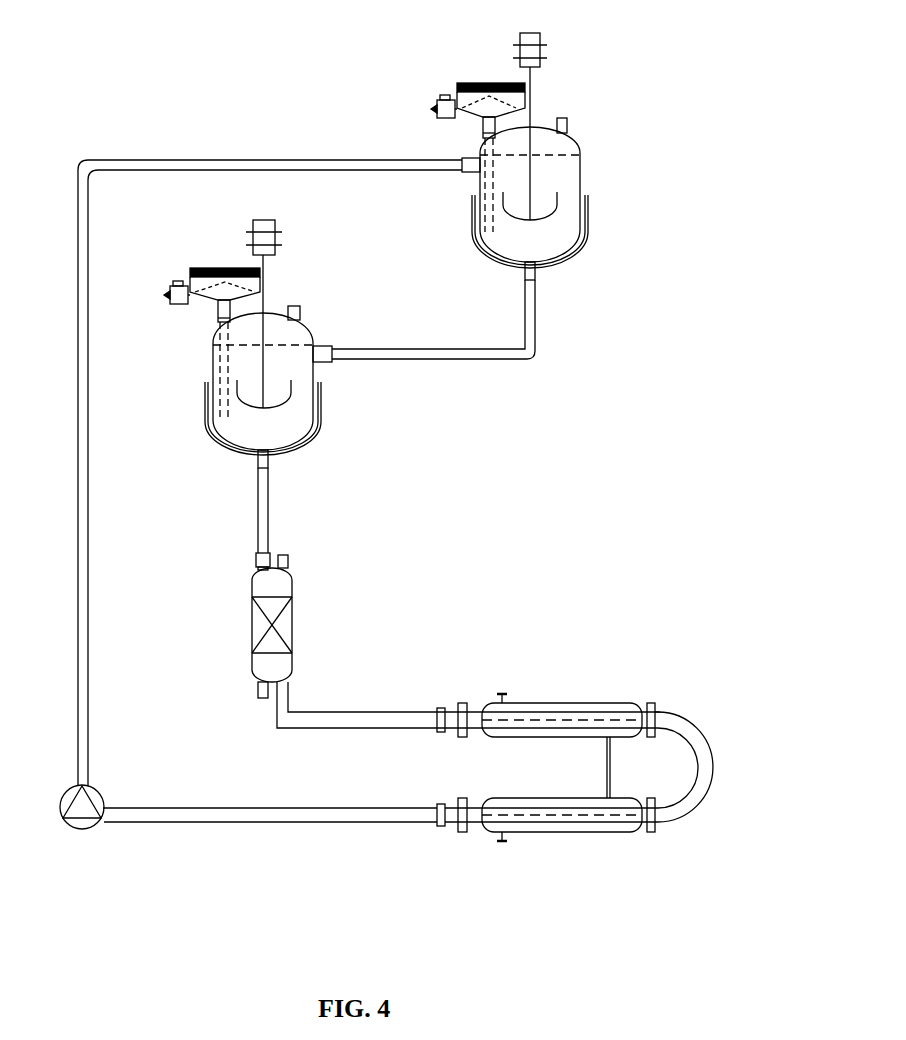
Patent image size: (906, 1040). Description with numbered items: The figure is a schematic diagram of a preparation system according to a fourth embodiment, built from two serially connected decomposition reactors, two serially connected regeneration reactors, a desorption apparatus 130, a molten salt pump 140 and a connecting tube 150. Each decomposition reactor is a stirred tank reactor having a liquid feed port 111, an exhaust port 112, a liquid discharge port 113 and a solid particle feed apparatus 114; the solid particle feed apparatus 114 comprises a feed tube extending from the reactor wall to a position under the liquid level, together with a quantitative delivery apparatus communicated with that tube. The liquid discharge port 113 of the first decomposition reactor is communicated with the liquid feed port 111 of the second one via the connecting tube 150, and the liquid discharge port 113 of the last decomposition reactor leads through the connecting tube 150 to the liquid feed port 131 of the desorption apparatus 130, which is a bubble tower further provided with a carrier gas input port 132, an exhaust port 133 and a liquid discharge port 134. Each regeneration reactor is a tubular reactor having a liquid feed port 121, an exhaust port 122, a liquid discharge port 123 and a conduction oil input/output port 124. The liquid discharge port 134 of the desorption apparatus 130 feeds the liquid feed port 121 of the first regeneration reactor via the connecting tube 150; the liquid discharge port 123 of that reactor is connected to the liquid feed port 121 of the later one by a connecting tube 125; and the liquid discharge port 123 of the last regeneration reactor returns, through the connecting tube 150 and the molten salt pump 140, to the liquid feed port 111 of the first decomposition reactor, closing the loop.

The liquid feed port 111 is at (476, 168).
The exhaust port 112 is at (568, 128).
The liquid discharge port 113 is at (524, 272).
The solid particle feed apparatus 114 is at (455, 83).
The liquid feed port 121 is at (662, 825).
The exhaust port 122 is at (645, 710).
The liquid discharge port 123 is at (662, 712).
The conduction oil input/output port 124 is at (497, 697).
The connecting tube 125 is at (700, 790).
The desorption apparatus 130 is at (294, 627).
The liquid feed port 131 is at (255, 565).
The carrier gas input port 132 is at (255, 687).
The exhaust port 133 is at (290, 562).
The liquid discharge port 134 is at (292, 688).
The molten salt pump 140 is at (103, 795).
The connecting tube 150 is at (247, 807).